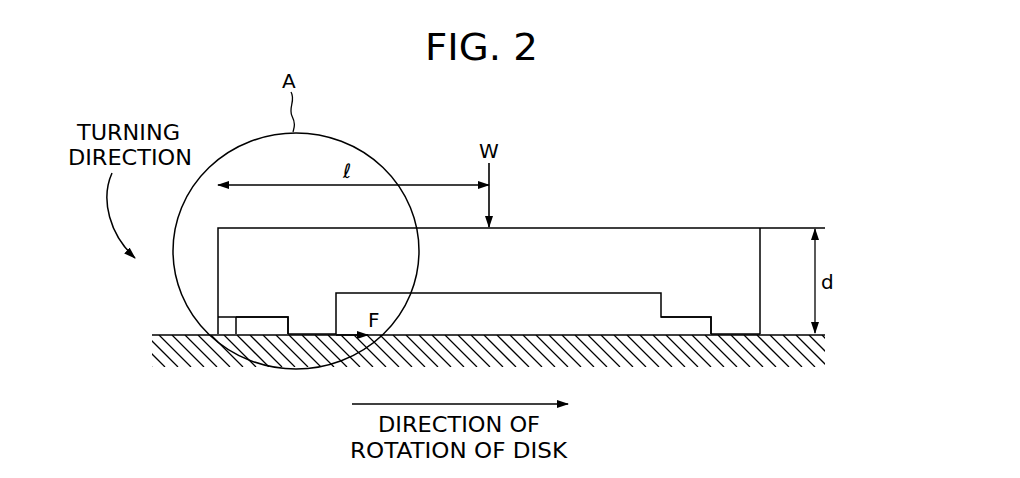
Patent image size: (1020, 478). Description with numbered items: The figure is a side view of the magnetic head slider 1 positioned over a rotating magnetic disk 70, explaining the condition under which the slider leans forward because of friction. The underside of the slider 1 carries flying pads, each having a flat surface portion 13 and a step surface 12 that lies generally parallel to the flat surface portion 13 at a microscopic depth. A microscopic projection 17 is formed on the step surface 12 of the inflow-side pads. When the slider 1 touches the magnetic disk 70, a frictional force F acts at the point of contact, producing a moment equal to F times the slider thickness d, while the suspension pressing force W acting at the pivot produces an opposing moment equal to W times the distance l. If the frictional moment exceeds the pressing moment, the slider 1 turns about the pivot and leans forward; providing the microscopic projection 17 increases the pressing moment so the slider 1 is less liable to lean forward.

The slider 1 is at (692, 200).
The step surface 12 is at (265, 310).
The flat surface portion 13 is at (316, 325).
The microscopic projection 17 is at (225, 322).
The magnetic disk 70 is at (163, 355).